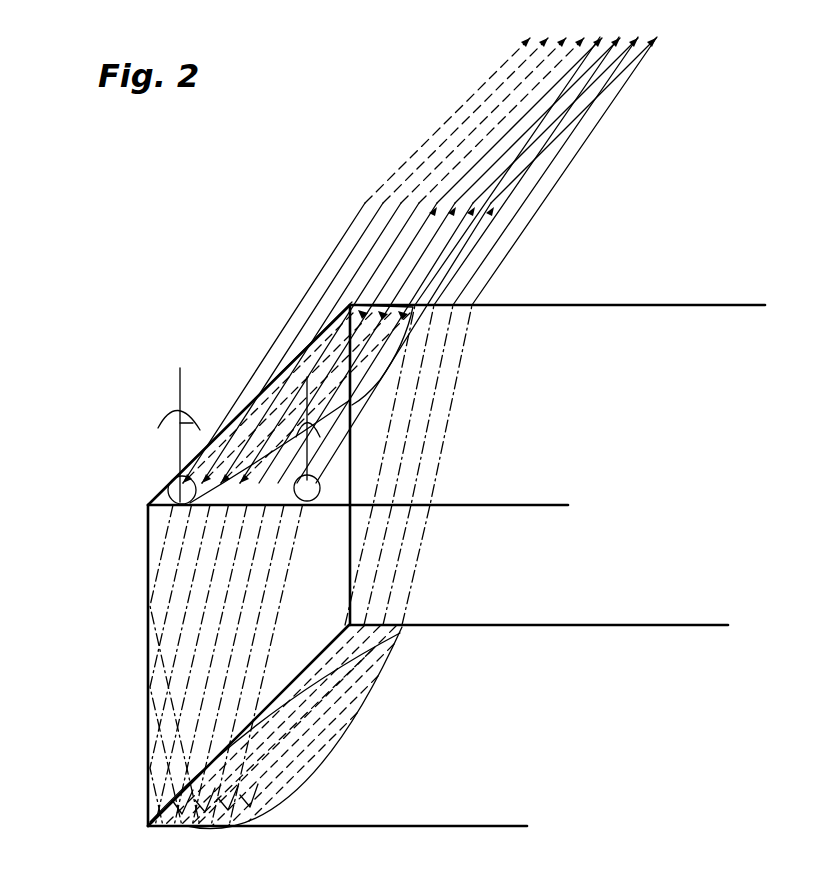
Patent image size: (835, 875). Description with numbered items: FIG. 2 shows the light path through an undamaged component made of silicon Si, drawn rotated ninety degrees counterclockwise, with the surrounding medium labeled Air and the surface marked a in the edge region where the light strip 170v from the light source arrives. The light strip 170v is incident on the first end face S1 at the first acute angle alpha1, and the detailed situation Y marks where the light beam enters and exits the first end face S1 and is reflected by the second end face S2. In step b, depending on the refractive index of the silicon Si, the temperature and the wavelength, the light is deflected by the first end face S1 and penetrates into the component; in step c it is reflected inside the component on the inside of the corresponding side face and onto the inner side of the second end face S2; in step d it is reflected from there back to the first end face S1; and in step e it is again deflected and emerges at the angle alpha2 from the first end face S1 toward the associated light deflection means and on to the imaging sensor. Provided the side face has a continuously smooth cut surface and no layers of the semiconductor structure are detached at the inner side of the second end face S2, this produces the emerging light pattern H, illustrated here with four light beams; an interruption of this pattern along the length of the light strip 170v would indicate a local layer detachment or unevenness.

The inclined reflecting facet a is at (310, 283).
The light strip 170v is at (317, 337).
The air region Air is at (215, 361).
The first end face S1 is at (557, 355).
The second end face S2 is at (438, 725).
The silicon Si is at (358, 565).
The light path step b is at (173, 527).
The light path step c is at (173, 567).
The light path step d is at (253, 713).
The light path step e is at (292, 480).
The emerging light pattern H is at (429, 246).
The detailed situation Y is at (168, 490).
The first acute angle alpha1 is at (317, 465).
The second angle alpha2 is at (330, 428).